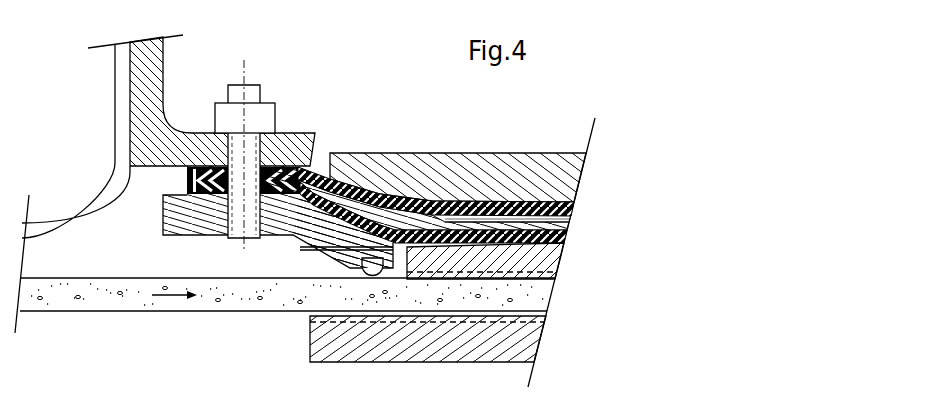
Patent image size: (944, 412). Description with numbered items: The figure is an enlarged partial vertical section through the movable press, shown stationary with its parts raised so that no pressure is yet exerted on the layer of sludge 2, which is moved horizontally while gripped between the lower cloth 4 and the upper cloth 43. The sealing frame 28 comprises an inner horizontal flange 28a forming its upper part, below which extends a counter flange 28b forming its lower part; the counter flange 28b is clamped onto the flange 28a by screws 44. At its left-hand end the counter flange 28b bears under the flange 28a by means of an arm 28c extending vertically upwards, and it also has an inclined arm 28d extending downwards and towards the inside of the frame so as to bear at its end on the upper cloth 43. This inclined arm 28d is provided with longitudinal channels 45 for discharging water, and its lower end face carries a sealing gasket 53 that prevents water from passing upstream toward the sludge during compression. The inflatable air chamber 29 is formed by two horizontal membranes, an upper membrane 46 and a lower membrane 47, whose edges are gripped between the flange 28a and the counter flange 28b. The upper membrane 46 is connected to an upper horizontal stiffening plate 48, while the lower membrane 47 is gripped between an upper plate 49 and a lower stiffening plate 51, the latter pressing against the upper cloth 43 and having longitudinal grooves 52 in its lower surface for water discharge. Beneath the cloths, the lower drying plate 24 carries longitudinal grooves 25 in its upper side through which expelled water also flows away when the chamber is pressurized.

The layer of sludge 2 is at (52, 288).
The lower cloth 4 is at (138, 312).
The lower drying plate 24 is at (335, 350).
The longitudinal grooves 25 is at (310, 333).
The sealing frame 28 is at (177, 117).
The inner horizontal flange 28a is at (283, 143).
The counter flange 28b is at (288, 220).
The arm 28c is at (143, 166).
The inclined arm 28d is at (353, 220).
The inflatable air chamber 29 is at (577, 215).
The upper cloth 43 is at (127, 277).
The screws 44 is at (248, 85).
The longitudinal channels 45 is at (392, 208).
The upper membrane 46 is at (570, 202).
The lower membrane 47 is at (552, 235).
The upper horizontal stiffening plate 48 is at (535, 175).
The upper plate 49 is at (568, 222).
The lower stiffening plate 51 is at (538, 255).
The longitudinal grooves 52 is at (540, 290).
The sealing gasket 53 is at (372, 268).